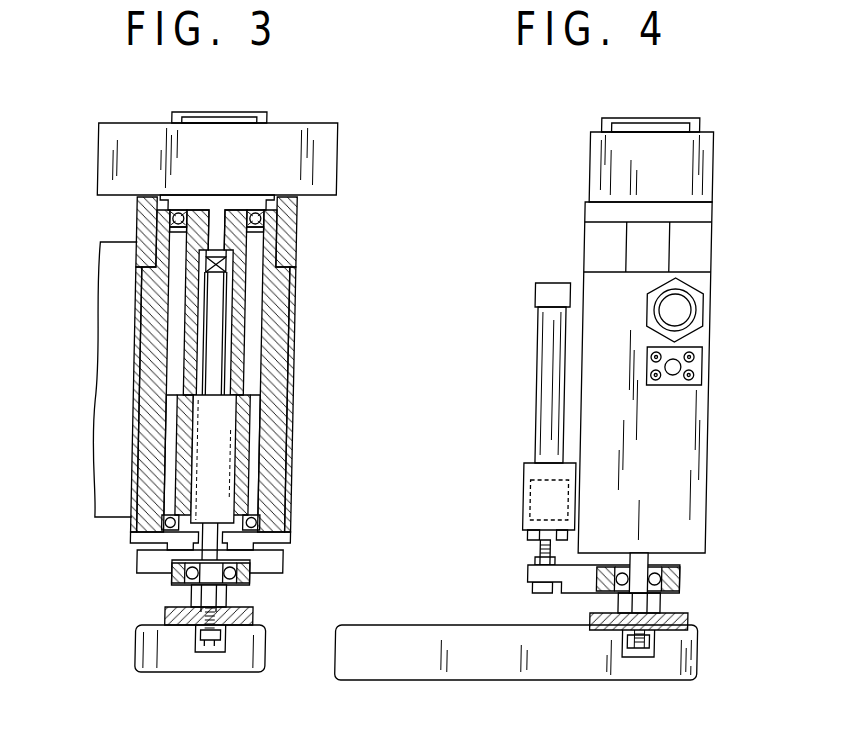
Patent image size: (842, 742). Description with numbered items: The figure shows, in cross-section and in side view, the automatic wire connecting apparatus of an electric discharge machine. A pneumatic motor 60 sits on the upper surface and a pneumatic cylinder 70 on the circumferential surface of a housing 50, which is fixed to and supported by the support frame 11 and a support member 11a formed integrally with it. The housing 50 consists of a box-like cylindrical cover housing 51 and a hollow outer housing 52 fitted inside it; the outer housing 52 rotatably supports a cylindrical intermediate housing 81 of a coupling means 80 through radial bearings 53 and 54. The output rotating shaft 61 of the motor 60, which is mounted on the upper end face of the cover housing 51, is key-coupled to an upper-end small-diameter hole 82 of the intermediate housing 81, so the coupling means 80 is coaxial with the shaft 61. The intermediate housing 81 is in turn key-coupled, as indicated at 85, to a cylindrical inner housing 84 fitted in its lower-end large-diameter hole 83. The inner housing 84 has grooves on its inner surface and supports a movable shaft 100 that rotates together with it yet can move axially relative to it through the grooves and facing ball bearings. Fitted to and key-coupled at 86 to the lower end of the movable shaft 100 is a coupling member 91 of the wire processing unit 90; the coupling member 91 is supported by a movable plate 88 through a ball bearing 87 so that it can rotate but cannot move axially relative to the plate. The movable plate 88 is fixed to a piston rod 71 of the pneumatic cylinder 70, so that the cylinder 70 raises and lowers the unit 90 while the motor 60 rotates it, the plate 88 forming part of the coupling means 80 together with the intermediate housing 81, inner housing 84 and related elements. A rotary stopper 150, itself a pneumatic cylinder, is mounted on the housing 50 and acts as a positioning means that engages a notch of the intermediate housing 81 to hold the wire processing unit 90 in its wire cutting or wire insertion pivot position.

In FIG. 3, the support frame 11 is at (108, 521).
In FIG. 3, the support member 11a is at (152, 575).
In FIG. 3, the housing 50 is at (158, 364).
In FIG. 3, the cover housing 51 is at (138, 327).
In FIG. 3, the outer housing 52 is at (138, 349).
In FIG. 3, the radial bearing 53 is at (262, 215).
In FIG. 3, the radial bearing 54 is at (257, 521).
In FIG. 3, the pneumatic motor 60 is at (326, 158).
In FIG. 4, the pneumatic motor 60 is at (600, 166).
In FIG. 3, the rotating shaft 61 is at (216, 210).
In FIG. 4, the pneumatic cylinder 70 is at (533, 385).
In FIG. 4, the piston rod 71 is at (536, 543).
In FIG. 3, the coupling means 80 is at (240, 287).
In FIG. 3, the intermediate housing 81 is at (240, 323).
In FIG. 3, the upper-end small-diameter hole 82 is at (228, 237).
In FIG. 3, the lower-end large-diameter hole 83 is at (248, 471).
In FIG. 3, the inner housing 84 is at (229, 441).
In FIG. 3, the key coupling 85 is at (188, 475).
In FIG. 3, the key coupling 86 is at (195, 590).
In FIG. 3, the ball bearing 87 is at (232, 596).
In FIG. 3, the movable plate 88 is at (252, 577).
In FIG. 4, the movable plate 88 is at (570, 593).
In FIG. 3, the wire processing unit 90 is at (135, 650).
In FIG. 4, the wire processing unit 90 is at (393, 618).
In FIG. 3, the coupling member 91 is at (255, 622).
In FIG. 4, the coupling member 91 is at (598, 628).
In FIG. 3, the movable shaft 100 is at (217, 357).
In FIG. 4, the movable shaft 100 is at (636, 598).
In FIG. 4, the rotary stopper 150 is at (678, 310).